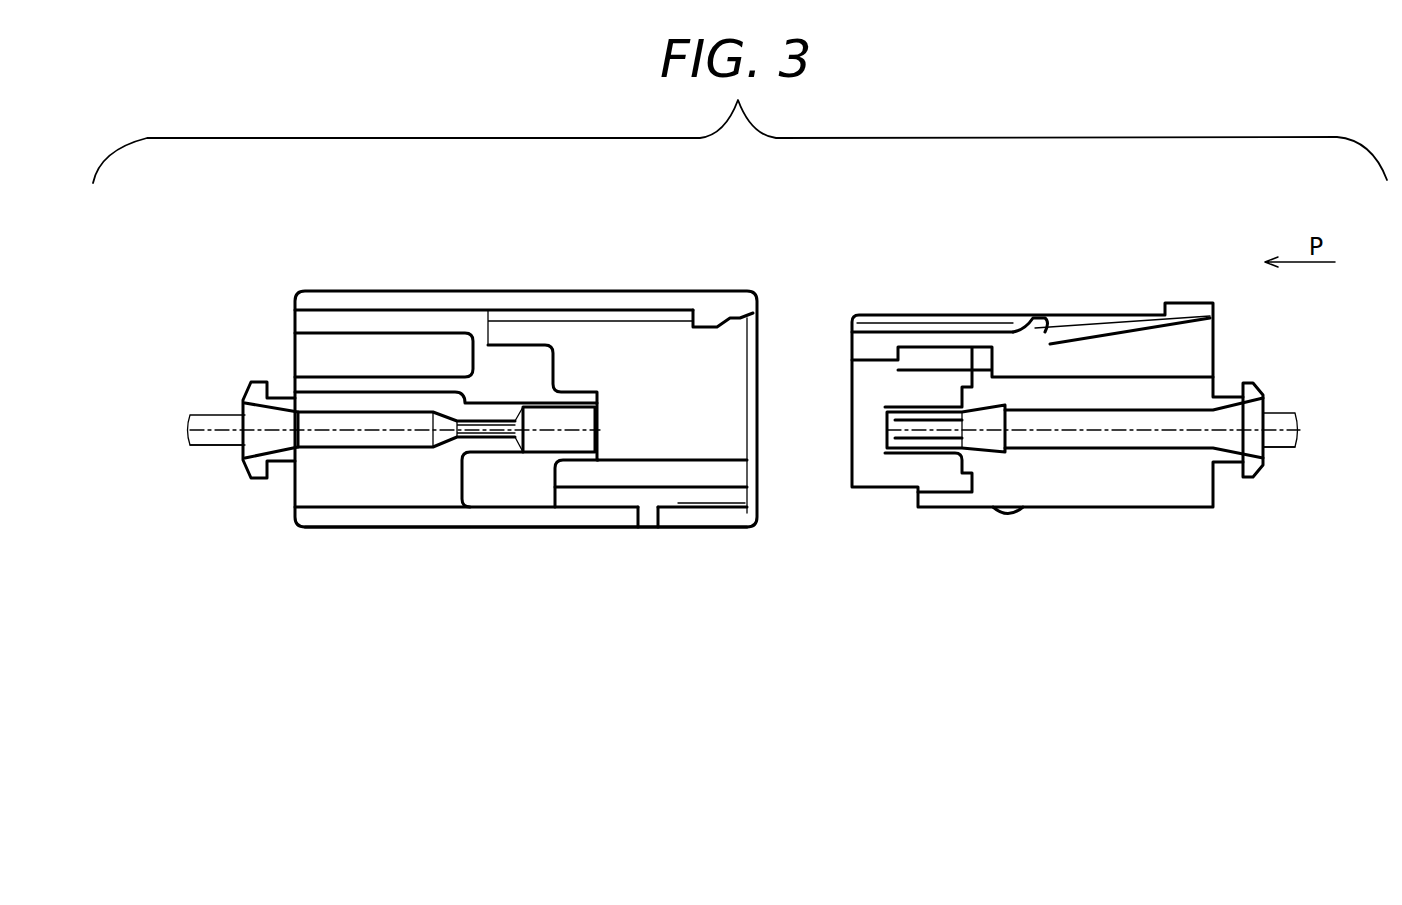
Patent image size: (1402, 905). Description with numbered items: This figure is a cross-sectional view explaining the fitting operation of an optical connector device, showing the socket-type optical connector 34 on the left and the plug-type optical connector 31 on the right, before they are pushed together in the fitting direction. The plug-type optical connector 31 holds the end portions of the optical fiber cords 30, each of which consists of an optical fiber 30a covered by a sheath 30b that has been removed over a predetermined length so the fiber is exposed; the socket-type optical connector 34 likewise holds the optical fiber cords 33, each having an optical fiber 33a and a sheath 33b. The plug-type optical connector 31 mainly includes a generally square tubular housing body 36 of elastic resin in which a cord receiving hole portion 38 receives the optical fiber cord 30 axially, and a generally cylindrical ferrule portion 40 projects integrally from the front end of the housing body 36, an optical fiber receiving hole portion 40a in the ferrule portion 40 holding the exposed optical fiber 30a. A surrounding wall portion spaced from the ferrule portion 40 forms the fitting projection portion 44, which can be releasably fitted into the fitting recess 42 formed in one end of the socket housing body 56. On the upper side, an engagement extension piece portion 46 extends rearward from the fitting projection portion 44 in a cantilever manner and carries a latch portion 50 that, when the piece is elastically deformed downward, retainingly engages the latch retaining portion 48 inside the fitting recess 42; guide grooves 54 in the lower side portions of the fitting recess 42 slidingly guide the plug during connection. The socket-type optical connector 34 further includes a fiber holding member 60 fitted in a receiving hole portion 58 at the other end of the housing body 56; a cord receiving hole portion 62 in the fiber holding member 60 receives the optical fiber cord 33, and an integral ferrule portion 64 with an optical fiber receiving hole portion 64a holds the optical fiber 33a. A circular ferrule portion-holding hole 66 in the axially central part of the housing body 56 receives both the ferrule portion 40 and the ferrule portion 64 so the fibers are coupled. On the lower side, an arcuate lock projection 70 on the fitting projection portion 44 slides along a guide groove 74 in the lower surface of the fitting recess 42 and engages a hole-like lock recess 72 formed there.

The optical fiber cord 30 is at (1300, 388).
The optical fiber 30a is at (997, 440).
The sheath 30b is at (1300, 450).
The plug-type optical connector 31 is at (1135, 529).
The optical fiber cord 33 is at (210, 384).
The optical fiber 33a is at (480, 437).
The sheath 33b is at (207, 450).
The socket-type optical connector 34 is at (487, 550).
The housing body 36 is at (1203, 500).
The cord receiving hole portion 38 is at (1249, 454).
The ferrule portion 40 is at (905, 465).
The optical fiber receiving hole portion 40a is at (895, 437).
The fitting recess 42 is at (665, 322).
The fitting projection portion 44 is at (885, 325).
The engagement extension piece portion 46 is at (1128, 316).
The latch retaining portion 48 is at (712, 337).
The latch portion 50 is at (1037, 316).
The guide groove 54 is at (748, 467).
The housing body 56 is at (490, 290).
The receiving hole portion 58 is at (378, 500).
The fiber holding member 60 is at (290, 497).
The cord receiving hole portion 62 is at (316, 418).
The ferrule portion 64 is at (505, 440).
The optical fiber receiving hole portion 64a is at (523, 430).
The ferrule portion-holding hole 66 is at (600, 420).
The lock projection 70 is at (1010, 512).
The lock recess 72 is at (648, 527).
The guide groove 74 is at (757, 513).